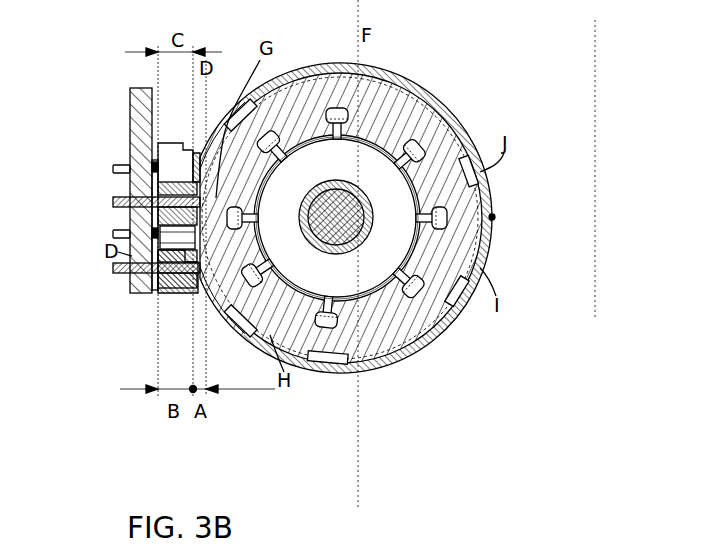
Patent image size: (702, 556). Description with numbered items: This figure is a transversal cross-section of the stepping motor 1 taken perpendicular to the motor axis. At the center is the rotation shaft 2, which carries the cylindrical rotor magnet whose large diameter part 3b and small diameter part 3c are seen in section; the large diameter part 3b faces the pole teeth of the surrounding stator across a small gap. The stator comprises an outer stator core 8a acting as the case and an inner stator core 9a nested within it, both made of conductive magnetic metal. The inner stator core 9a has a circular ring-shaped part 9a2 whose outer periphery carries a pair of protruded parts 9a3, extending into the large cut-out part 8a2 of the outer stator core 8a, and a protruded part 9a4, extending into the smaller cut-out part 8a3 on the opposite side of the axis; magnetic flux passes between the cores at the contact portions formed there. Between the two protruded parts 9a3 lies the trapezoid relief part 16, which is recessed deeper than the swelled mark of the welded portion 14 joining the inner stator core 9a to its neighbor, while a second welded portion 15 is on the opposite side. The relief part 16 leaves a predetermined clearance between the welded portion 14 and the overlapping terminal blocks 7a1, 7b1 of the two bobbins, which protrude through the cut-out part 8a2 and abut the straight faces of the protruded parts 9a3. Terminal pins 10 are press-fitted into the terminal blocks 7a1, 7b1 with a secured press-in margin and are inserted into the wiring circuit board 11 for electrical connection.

The stepping motor 1 is at (595, 91).
The rotation shaft 2 is at (330, 182).
The large diameter part 3b is at (386, 260).
The small diameter part 3c is at (352, 258).
The terminal block 7a1 is at (178, 297).
The terminal block 7b1 is at (176, 140).
The outer stator core 8a is at (420, 76).
The cut-out part 8a2 is at (225, 340).
The cut-out part 8a3 is at (488, 172).
The inner stator core 9a is at (480, 198).
The circular ring-shaped part 9a2 is at (335, 352).
The protruded part 9a3 is at (232, 102).
The protruded part 9a4 is at (486, 244).
The terminal pin 10 is at (113, 268).
The wiring circuit board 11 is at (130, 92).
The welded portion 14 is at (152, 224).
The welded portion 15 is at (495, 218).
The relief part 16 is at (200, 172).